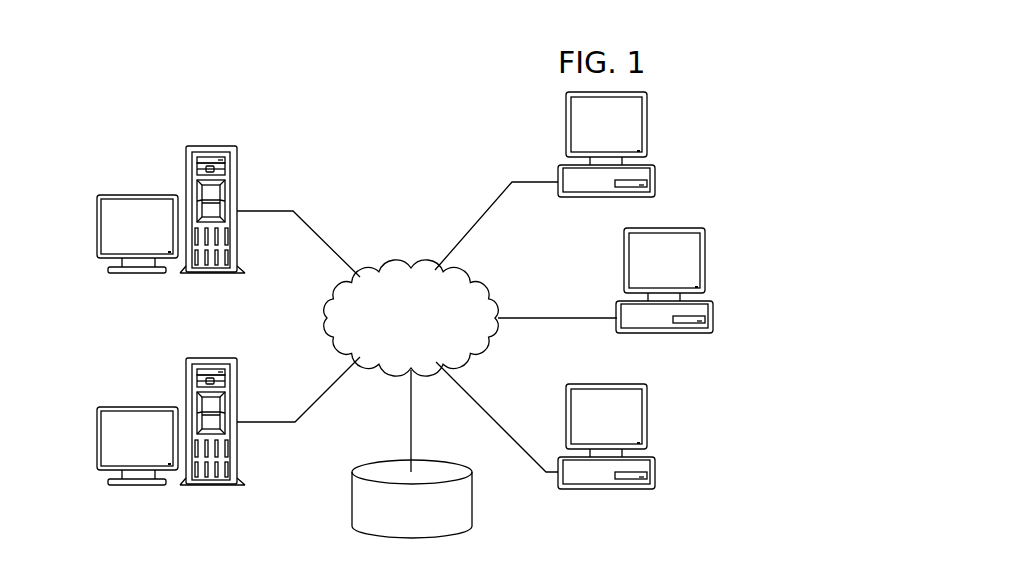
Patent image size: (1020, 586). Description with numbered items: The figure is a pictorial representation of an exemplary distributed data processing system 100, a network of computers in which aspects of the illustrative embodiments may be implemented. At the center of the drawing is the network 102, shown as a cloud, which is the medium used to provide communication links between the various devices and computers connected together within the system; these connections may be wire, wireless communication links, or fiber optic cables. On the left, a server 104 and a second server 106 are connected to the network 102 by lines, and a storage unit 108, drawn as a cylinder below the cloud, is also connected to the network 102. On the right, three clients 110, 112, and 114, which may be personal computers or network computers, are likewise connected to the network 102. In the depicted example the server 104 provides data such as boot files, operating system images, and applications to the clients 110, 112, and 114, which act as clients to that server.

The distributed data processing system 100 is at (300, 137).
The network 102 is at (405, 265).
The server 104 is at (97, 227).
The server 106 is at (97, 440).
The storage unit 108 is at (352, 500).
The client 110 is at (655, 169).
The client 112 is at (715, 328).
The client 114 is at (655, 483).